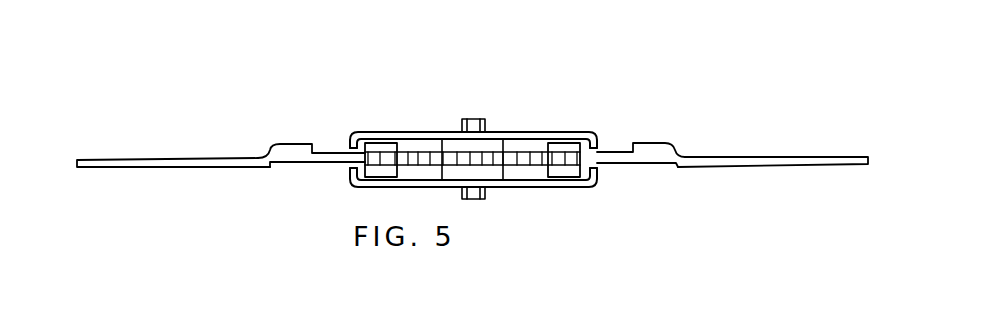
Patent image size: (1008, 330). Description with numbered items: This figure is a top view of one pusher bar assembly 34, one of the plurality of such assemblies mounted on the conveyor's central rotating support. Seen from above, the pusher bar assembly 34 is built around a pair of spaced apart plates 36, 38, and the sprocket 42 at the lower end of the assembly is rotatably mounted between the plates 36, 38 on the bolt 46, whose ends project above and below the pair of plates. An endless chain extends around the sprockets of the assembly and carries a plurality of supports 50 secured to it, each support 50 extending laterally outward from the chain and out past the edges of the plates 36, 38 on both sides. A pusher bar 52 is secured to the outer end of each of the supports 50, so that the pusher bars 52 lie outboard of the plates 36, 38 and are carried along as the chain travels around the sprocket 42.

The pusher bar assembly 34 is at (416, 132).
The plate 36 is at (504, 181).
The plate 38 is at (565, 130).
The sprocket 42 is at (508, 160).
The bolt 46 is at (472, 118).
The support 50 is at (310, 163).
The pusher bar 52 is at (175, 158).